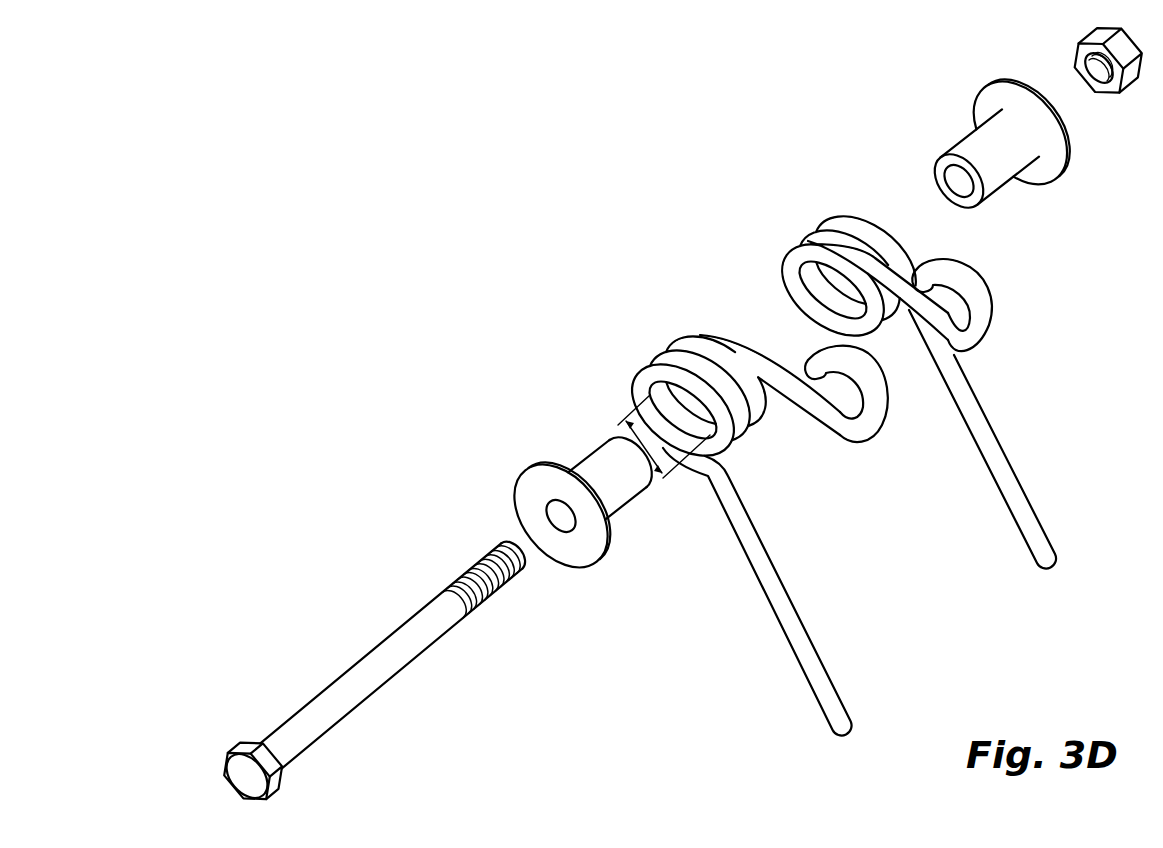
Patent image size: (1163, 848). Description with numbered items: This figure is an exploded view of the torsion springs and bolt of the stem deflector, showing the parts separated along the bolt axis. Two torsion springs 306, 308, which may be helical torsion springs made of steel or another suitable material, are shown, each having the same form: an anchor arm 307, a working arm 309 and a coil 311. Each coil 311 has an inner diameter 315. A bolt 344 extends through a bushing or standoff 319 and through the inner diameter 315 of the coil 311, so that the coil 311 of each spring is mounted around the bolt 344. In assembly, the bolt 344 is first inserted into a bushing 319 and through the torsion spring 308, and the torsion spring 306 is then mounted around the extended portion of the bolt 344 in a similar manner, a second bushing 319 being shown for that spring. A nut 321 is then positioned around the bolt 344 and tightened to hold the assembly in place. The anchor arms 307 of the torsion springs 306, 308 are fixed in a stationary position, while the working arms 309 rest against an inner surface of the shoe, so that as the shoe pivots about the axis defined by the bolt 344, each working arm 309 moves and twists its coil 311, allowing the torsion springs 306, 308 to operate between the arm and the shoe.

The torsion spring 306 is at (815, 214).
The anchor arm 307 is at (838, 420).
The torsion spring 308 is at (739, 507).
The working arm 309 is at (798, 642).
The coil 311 is at (738, 425).
The inner diameter 315 is at (645, 458).
The bushing 319 is at (590, 543).
The nut 321 is at (1130, 83).
The bolt 344 is at (413, 627).